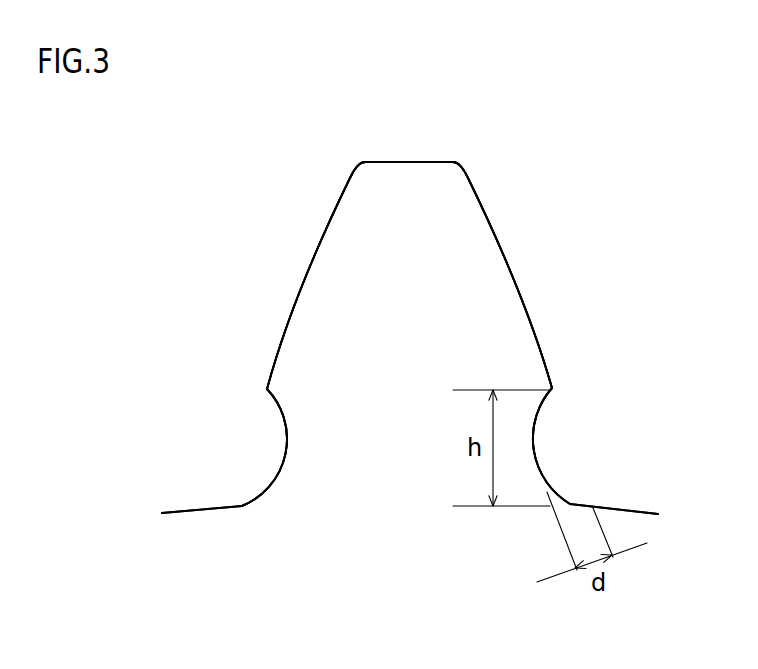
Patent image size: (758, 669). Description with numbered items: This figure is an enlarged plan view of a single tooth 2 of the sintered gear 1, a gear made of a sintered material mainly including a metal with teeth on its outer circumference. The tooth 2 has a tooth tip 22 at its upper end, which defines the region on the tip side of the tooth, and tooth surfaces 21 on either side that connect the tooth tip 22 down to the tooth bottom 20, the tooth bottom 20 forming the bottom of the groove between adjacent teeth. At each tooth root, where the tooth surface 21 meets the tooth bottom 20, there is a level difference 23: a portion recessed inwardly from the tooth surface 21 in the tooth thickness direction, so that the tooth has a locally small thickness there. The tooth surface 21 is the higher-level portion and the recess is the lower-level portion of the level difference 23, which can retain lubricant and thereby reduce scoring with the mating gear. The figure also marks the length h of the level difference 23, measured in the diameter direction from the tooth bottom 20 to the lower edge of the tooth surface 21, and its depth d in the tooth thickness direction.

The sintered gear 1 is at (173, 293).
The tooth 2 is at (503, 200).
The tooth bottom 20 is at (182, 508).
The tooth surface 21 is at (312, 262).
The tooth tip 22 is at (429, 160).
The level difference 23 is at (267, 452).